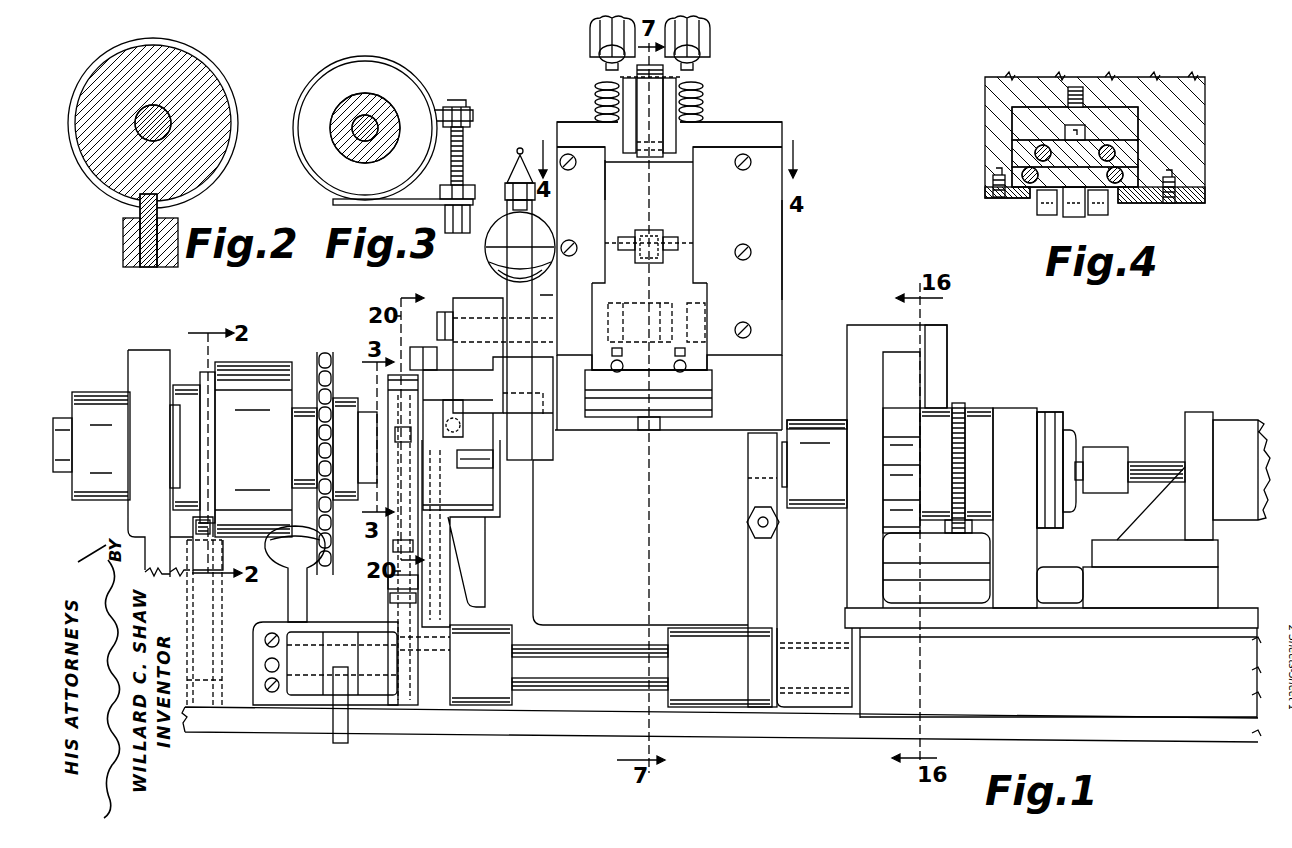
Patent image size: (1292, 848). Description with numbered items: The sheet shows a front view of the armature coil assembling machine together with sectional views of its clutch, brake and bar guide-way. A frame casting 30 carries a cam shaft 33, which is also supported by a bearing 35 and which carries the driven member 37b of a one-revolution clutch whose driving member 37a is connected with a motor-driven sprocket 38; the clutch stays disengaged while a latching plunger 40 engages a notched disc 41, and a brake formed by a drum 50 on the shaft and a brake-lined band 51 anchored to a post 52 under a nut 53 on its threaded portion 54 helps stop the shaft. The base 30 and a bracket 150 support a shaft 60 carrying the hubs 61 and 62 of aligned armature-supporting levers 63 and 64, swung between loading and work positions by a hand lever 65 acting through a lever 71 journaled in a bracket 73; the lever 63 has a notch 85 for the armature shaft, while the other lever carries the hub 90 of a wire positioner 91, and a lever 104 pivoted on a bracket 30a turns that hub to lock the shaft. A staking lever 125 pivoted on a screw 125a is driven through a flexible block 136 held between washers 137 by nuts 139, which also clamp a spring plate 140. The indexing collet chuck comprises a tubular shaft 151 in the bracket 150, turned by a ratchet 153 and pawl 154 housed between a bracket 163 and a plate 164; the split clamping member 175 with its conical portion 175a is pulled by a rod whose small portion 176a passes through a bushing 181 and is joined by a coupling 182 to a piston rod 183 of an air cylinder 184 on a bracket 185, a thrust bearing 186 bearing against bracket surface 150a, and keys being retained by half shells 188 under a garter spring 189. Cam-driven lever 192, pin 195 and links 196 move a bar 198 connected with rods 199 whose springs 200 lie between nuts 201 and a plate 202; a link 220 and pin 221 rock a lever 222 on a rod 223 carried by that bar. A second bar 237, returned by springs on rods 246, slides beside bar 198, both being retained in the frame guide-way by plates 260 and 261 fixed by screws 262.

In FIG. 4, the frame casting 30 is at (1197, 103).
In FIG. 1, the frame casting 30 is at (270, 621).
In FIG. 1, the bracket 30a is at (480, 367).
In FIG. 2, the cam shaft 33 is at (163, 135).
In FIG. 3, the cam shaft 33 is at (348, 122).
In FIG. 1, the cam shaft 33 is at (66, 418).
In FIG. 1, the bearing 35 is at (98, 391).
In FIG. 1, the driving member of Hilliard clutch 37a is at (188, 385).
In FIG. 2, the driven member of Hilliard clutch 37b is at (222, 86).
In FIG. 1, the driven member of Hilliard clutch 37b is at (276, 366).
In FIG. 1, the sprocket 38 is at (326, 352).
In FIG. 2, the latching plunger 40 is at (140, 209).
In FIG. 1, the latching plunger 40 is at (196, 520).
In FIG. 2, the disc 41 is at (200, 72).
In FIG. 1, the disc 41 is at (213, 428).
In FIG. 3, the drum 50 is at (334, 77).
In FIG. 3, the brake-lined band 51 is at (392, 60).
In FIG. 1, the brake-lined band 51 is at (408, 407).
In FIG. 3, the post 52 is at (450, 229).
In FIG. 1, the post 52 is at (388, 595).
In FIG. 3, the nut 53 is at (460, 100).
In FIG. 3, the threaded portion of post 54 is at (451, 170).
In FIG. 1, the shaft 60 is at (591, 690).
In FIG. 1, the hub of lever 63 61 is at (702, 632).
In FIG. 1, the hub of lever 64 62 is at (513, 630).
In FIG. 1, the lever 63 is at (748, 499).
In FIG. 1, the lever 64 is at (402, 583).
In FIG. 1, the lever 65 is at (304, 600).
In FIG. 1, the lever 71 is at (341, 744).
In FIG. 1, the bracket 73 is at (316, 688).
In FIG. 1, the notch 85 is at (763, 472).
In FIG. 1, the hub of wire positioner 90 is at (477, 498).
In FIG. 1, the wire positioner 91 is at (460, 435).
In FIG. 1, the lever 104 is at (413, 346).
In FIG. 1, the lever 125 is at (505, 288).
In FIG. 1, the screw 125a is at (445, 311).
In FIG. 1, the flexible block 136 is at (492, 256).
In FIG. 1, the washers 137 is at (546, 275).
In FIG. 1, the nuts 139 is at (535, 197).
In FIG. 1, the plate 140 is at (512, 160).
In FIG. 1, the bracket 150 is at (778, 625).
In FIG. 1, the bracket surface 150a is at (1045, 410).
In FIG. 1, the tubular shaft 151 is at (820, 428).
In FIG. 1, the ratchet 153 is at (888, 402).
In FIG. 1, the pawl 154 is at (898, 360).
In FIG. 1, the bracket 163 is at (852, 341).
In FIG. 1, the plate 164 is at (943, 342).
In FIG. 1, the split inner clamping member 175 is at (790, 455).
In FIG. 1, the conical portion 175a is at (786, 482).
In FIG. 1, the small portion of rod 176a is at (1083, 480).
In FIG. 1, the bushing 181 is at (1072, 433).
In FIG. 1, the coupling 182 is at (1112, 453).
In FIG. 1, the rod 183 is at (1155, 462).
In FIG. 1, the cylinder 184 is at (1263, 435).
In FIG. 1, the bracket 185 is at (1198, 420).
In FIG. 1, the thrust bearing 186 is at (1046, 453).
In FIG. 1, the half shells 188 is at (983, 527).
In FIG. 1, the garter spring 189 is at (958, 406).
In FIG. 1, the lever 192 is at (660, 96).
In FIG. 1, the pin 195 is at (694, 77).
In FIG. 1, the links 196 is at (627, 84).
In FIG. 4, the bar 198 is at (1133, 173).
In FIG. 1, the bar 198 is at (688, 201).
In FIG. 4, the rods 199 is at (1018, 168).
In FIG. 1, the rods 199 is at (596, 92).
In FIG. 1, the springs 200 is at (598, 62).
In FIG. 1, the nuts 201 is at (590, 29).
In FIG. 1, the plate 202 is at (567, 125).
In FIG. 4, the link 220 is at (1068, 215).
In FIG. 1, the link 220 is at (665, 230).
In FIG. 1, the pin 221 is at (683, 243).
In FIG. 1, the lever 222 is at (693, 293).
In FIG. 1, the rod 223 is at (707, 358).
In FIG. 4, the bar 237 is at (1135, 155).
In FIG. 4, the rods 246 is at (1040, 150).
In FIG. 4, the plate 260 is at (1015, 200).
In FIG. 1, the plate 260 is at (602, 183).
In FIG. 4, the plate 261 is at (1203, 202).
In FIG. 1, the plate 261 is at (774, 233).
In FIG. 4, the screws 262 is at (993, 200).
In FIG. 1, the screws 262 is at (569, 170).